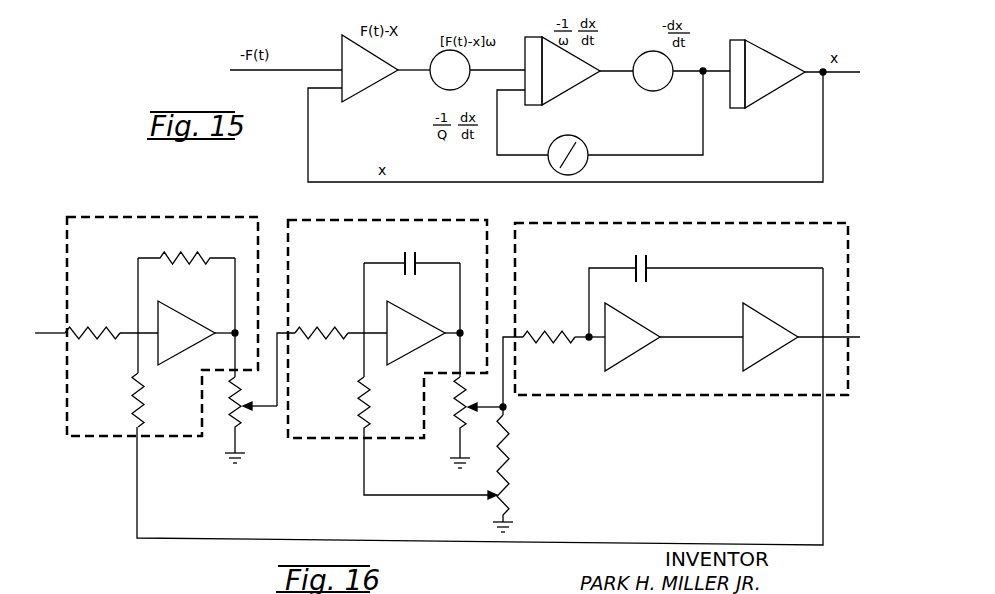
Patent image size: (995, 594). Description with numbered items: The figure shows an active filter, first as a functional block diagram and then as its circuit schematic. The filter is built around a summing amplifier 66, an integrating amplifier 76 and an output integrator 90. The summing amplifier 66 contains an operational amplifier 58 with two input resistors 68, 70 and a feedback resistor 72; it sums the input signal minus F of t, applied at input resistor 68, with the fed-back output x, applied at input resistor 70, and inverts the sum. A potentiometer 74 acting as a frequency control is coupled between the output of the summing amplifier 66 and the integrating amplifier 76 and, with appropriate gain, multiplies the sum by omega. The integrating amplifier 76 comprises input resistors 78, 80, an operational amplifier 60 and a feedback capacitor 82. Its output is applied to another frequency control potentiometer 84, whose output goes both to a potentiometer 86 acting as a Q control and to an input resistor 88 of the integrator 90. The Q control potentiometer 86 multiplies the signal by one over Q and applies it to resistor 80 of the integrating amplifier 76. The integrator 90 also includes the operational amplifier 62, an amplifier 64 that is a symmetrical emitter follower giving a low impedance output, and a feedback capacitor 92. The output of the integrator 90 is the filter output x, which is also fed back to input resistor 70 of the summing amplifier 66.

In FIG. 16, the amplifier 58 is at (191, 320).
In FIG. 16, the amplifier 60 is at (420, 325).
In FIG. 16, the amplifier 62 is at (641, 330).
In FIG. 16, the amplifier 64 is at (772, 328).
In FIG. 15, the summing amplifier 66 is at (343, 37).
In FIG. 16, the summing amplifier 66 is at (213, 217).
In FIG. 16, the input resistor 68 is at (98, 324).
In FIG. 16, the input resistor 70 is at (147, 403).
In FIG. 16, the feedback resistor 72 is at (204, 256).
In FIG. 15, the potentiometer 74 is at (437, 85).
In FIG. 16, the potentiometer 74 is at (233, 412).
In FIG. 15, the integrating amplifier 76 is at (548, 45).
In FIG. 16, the integrating amplifier 76 is at (432, 220).
In FIG. 16, the input resistor 78 is at (318, 326).
In FIG. 16, the input resistor 80 is at (372, 402).
In FIG. 16, the feedback capacitor 82 is at (420, 259).
In FIG. 15, the potentiometer 84 is at (645, 54).
In FIG. 16, the potentiometer 84 is at (458, 412).
In FIG. 15, the potentiometer 86 is at (583, 141).
In FIG. 16, the potentiometer 86 is at (510, 490).
In FIG. 16, the input resistor 88 is at (556, 328).
In FIG. 15, the integrator 90 is at (778, 56).
In FIG. 16, the integrator 90 is at (660, 223).
In FIG. 16, the feedback capacitor 92 is at (651, 264).